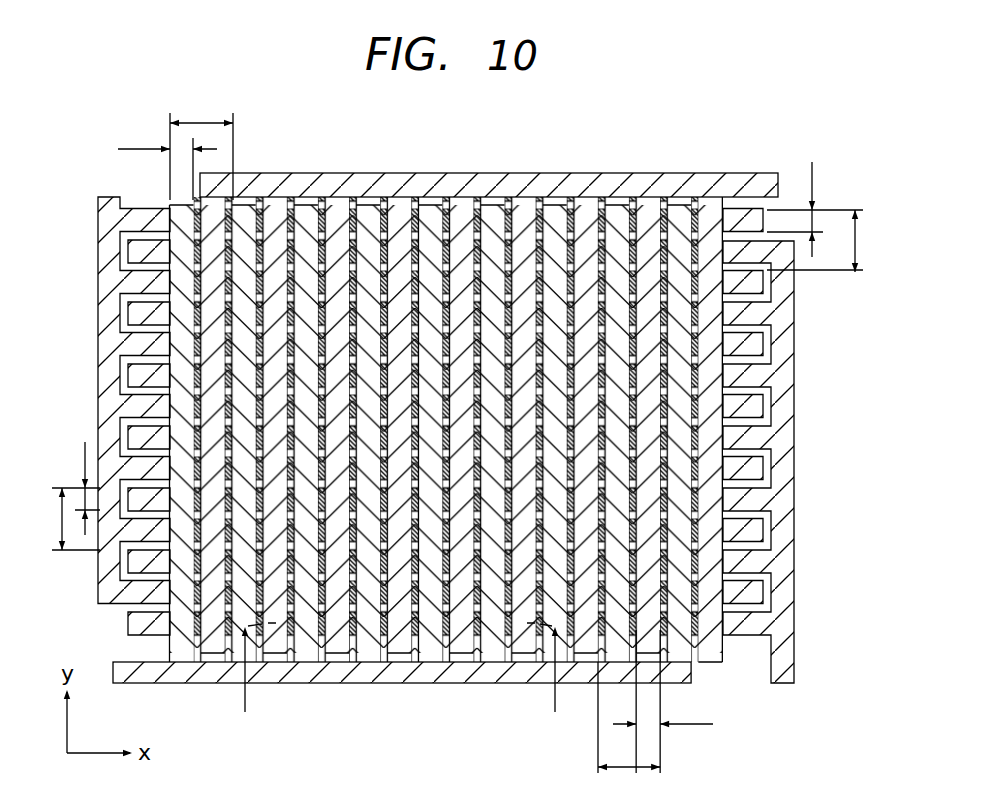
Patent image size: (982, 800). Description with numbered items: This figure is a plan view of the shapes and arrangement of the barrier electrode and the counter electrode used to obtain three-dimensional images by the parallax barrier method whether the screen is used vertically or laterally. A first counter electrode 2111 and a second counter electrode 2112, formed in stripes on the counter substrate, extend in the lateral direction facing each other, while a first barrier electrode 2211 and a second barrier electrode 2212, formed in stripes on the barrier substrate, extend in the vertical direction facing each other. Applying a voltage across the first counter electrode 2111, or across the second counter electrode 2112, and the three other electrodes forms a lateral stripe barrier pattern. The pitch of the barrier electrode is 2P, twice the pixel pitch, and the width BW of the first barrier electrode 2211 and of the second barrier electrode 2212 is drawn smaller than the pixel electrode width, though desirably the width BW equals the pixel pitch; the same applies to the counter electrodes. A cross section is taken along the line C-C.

The first barrier electrode 2211 is at (487, 178).
The second barrier electrode 2212 is at (394, 680).
The first counter electrode 2111 is at (112, 340).
The second counter electrode 2112 is at (775, 381).
The line C- C is at (399, 680).
The width of the barrier electrode BW is at (442, 449).
The pitch of the barrier electrode 2P is at (447, 433).